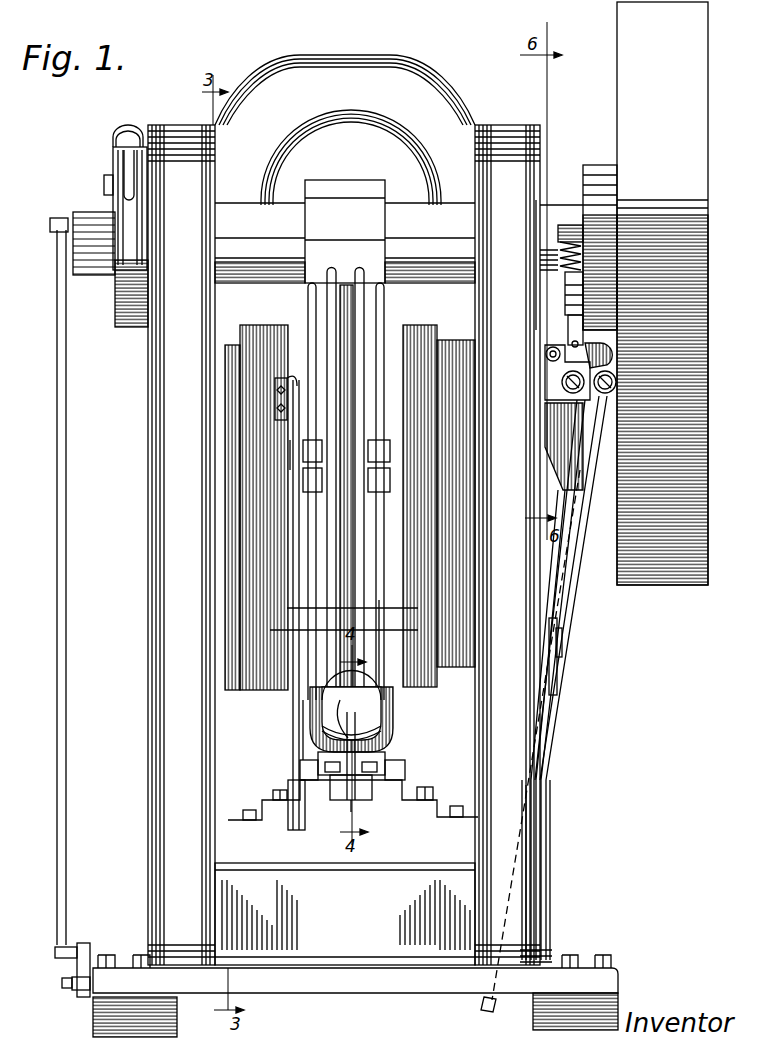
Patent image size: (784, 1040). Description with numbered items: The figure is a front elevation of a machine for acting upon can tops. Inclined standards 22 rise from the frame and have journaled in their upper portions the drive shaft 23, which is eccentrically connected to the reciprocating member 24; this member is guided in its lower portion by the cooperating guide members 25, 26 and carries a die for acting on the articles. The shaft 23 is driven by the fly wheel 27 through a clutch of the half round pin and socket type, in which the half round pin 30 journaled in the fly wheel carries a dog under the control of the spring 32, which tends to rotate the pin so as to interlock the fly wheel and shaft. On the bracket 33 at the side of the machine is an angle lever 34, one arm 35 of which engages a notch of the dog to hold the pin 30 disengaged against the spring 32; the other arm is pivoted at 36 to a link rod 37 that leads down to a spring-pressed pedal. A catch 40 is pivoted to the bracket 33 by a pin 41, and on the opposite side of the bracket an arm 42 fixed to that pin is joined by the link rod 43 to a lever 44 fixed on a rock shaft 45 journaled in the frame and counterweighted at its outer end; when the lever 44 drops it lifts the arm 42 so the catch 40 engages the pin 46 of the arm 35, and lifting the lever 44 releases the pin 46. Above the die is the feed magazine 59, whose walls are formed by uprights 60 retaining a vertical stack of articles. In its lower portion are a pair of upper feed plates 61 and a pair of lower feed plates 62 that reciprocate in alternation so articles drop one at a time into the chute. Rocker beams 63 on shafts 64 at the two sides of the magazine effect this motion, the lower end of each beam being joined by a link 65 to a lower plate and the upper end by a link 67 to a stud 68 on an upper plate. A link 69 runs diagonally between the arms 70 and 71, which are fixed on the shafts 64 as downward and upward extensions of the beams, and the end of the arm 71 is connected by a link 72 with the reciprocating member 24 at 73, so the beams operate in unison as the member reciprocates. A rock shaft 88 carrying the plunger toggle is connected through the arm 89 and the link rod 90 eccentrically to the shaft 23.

The inclined standards 22 is at (166, 575).
The drive shaft 23 is at (561, 204).
The reciprocating member 24 is at (386, 289).
The guide member 25 is at (437, 686).
The guide member 26 is at (475, 680).
The fly wheel 27 is at (698, 229).
The half round pin 30 is at (568, 292).
The spring 32 is at (545, 254).
The bracket 33 is at (583, 478).
The angle lever 34 is at (612, 396).
The arm 35 is at (584, 330).
The pivot 36 is at (612, 388).
The link rod 37 is at (572, 613).
The catch 40 is at (560, 345).
The pin 41 is at (545, 404).
The arm 42 is at (605, 340).
The link rod 43 is at (560, 590).
The lever 44 is at (558, 661).
The rock shaft 45 is at (565, 650).
The pin 46 is at (578, 345).
The feed magazine 59 is at (392, 736).
The uprights 60 is at (386, 602).
The upper feed plates 61 is at (376, 692).
The lower feed plates 62 is at (313, 720).
The rocker beams 63 is at (357, 786).
The shafts 64 is at (322, 802).
The link 65 is at (352, 790).
The link 67 is at (395, 748).
The stud 68 is at (312, 748).
The link 69 is at (300, 720).
The arm 70 is at (300, 784).
The arm 71 is at (297, 638).
The link 72 is at (293, 460).
The connection point 73 is at (296, 380).
The rock shaft 88 is at (72, 984).
The arm 89 is at (90, 962).
The link rod 90 is at (66, 746).